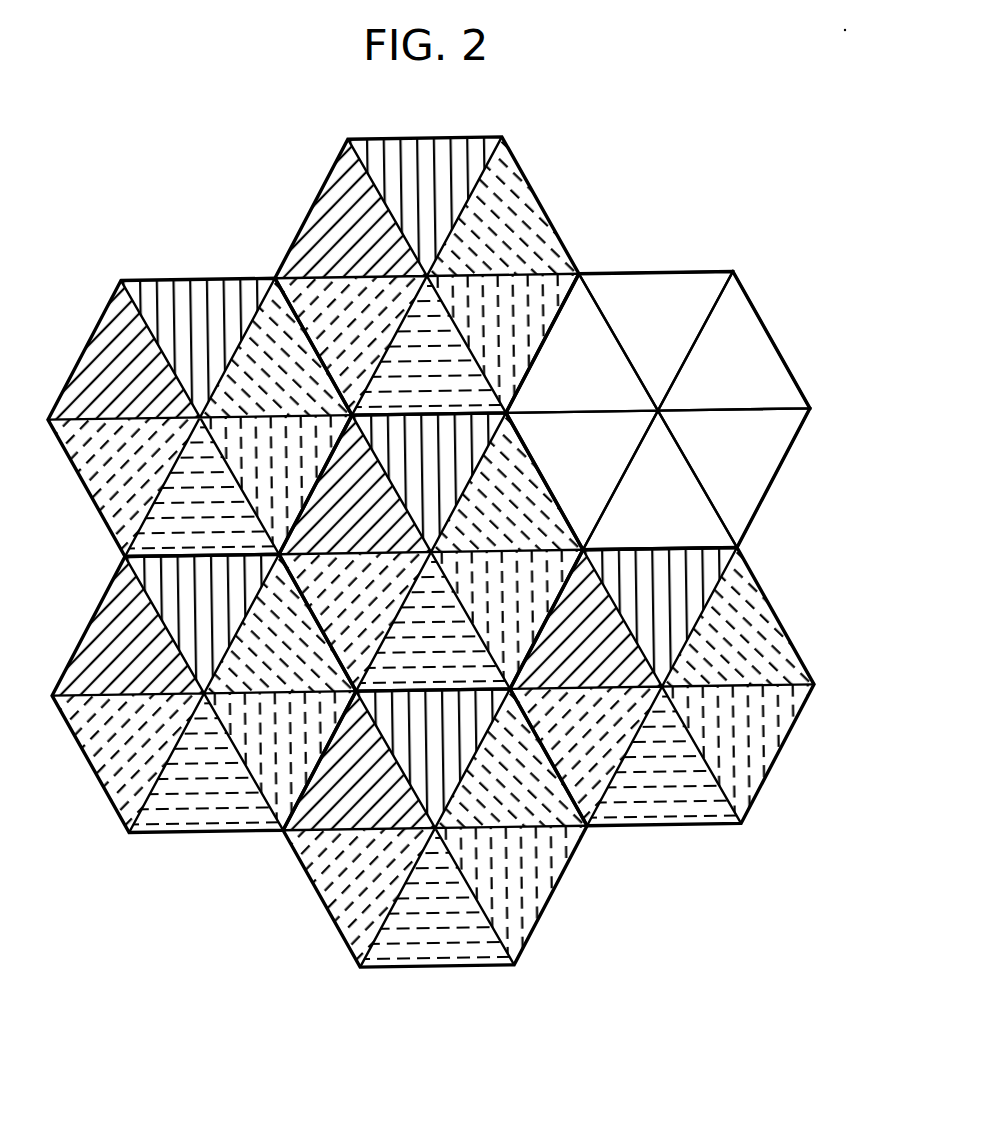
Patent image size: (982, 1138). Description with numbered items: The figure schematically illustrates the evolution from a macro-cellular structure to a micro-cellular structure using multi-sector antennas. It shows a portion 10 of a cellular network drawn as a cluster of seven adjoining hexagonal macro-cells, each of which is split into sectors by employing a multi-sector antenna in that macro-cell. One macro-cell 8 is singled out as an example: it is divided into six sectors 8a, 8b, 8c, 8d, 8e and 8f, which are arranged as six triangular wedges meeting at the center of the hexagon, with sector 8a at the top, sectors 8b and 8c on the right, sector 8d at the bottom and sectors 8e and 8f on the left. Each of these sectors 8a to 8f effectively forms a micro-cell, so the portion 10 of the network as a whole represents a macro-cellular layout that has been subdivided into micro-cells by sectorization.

The macro-cell 8 is at (658, 274).
The sector 8a is at (670, 338).
The sector 8b is at (747, 387).
The sector 8c is at (746, 468).
The sector 8d is at (671, 503).
The sector 8e is at (597, 468).
The sector 8f is at (592, 387).
The portion of the cellular network 10 is at (783, 239).